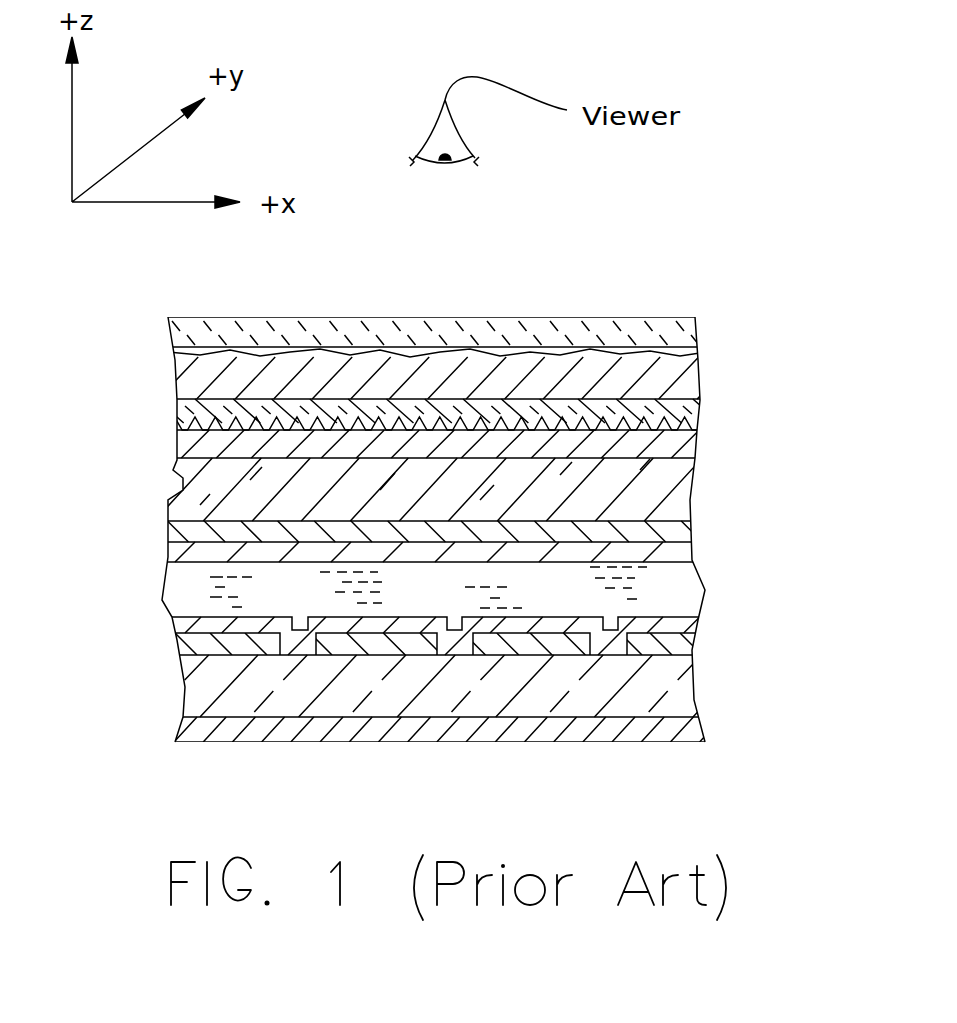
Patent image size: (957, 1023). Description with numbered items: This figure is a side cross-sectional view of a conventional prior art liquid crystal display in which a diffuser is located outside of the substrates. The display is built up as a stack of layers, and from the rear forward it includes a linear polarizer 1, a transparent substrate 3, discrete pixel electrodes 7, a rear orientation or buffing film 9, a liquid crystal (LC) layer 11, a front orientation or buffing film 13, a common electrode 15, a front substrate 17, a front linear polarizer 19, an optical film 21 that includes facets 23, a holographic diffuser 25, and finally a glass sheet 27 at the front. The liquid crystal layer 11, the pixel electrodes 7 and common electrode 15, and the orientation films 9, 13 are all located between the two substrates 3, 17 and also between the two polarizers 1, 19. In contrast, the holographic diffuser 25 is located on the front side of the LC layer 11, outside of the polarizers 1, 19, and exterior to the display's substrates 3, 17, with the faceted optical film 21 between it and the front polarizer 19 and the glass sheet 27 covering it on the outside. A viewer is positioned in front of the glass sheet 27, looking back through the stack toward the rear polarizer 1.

The linear polarizer 1 is at (680, 733).
The transparent substrate 3 is at (680, 697).
The discrete pixel electrodes 7 is at (230, 657).
The rear orientation or buffing film 9 is at (208, 622).
The liquid crystal layer 11 is at (680, 593).
The front orientation or buffing film 13 is at (680, 553).
The common electrode 15 is at (237, 530).
The front substrate 17 is at (660, 483).
The front linear polarizer 19 is at (408, 440).
The optical film 21 is at (213, 407).
The facets 23 is at (680, 430).
The holographic diffuser 25 is at (673, 368).
The glass sheet 27 is at (568, 333).